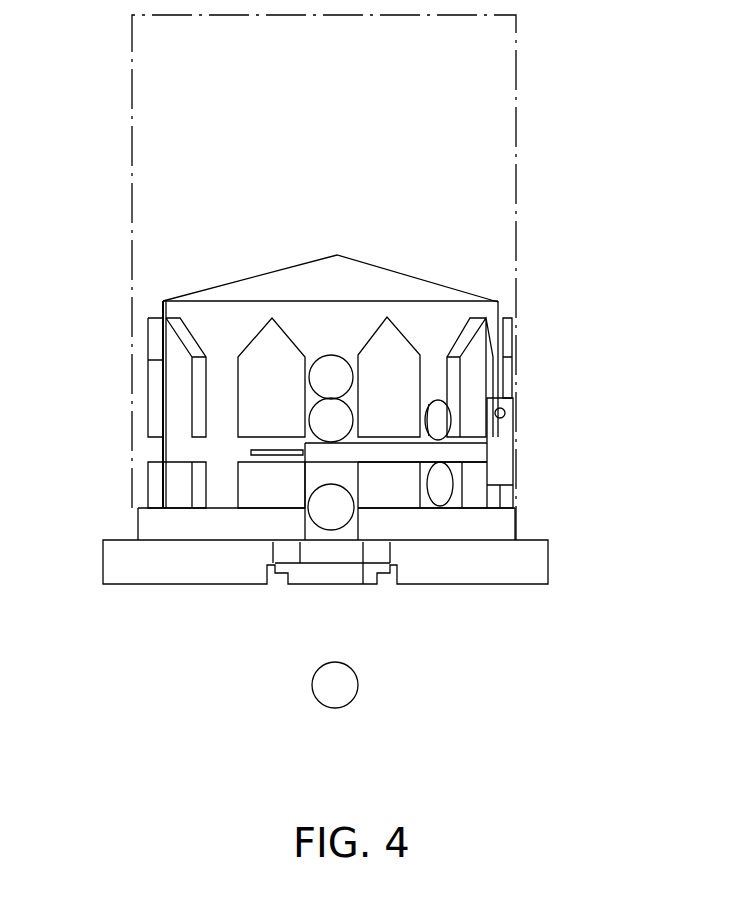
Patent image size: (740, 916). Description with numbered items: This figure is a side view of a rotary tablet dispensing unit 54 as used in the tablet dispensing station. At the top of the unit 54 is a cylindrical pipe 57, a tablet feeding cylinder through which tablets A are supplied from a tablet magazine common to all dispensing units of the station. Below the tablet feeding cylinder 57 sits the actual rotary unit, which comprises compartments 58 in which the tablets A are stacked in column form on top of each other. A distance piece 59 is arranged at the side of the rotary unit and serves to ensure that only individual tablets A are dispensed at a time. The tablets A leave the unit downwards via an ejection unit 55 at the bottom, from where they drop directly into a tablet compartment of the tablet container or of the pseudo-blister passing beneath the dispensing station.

The cylindrical pipe 57 is at (470, 124).
The tablet dispensing unit 54 is at (445, 315).
The compartments 58 is at (440, 383).
The distance piece 59 is at (500, 452).
The ejection unit 55 is at (168, 563).
The tablets A is at (335, 686).